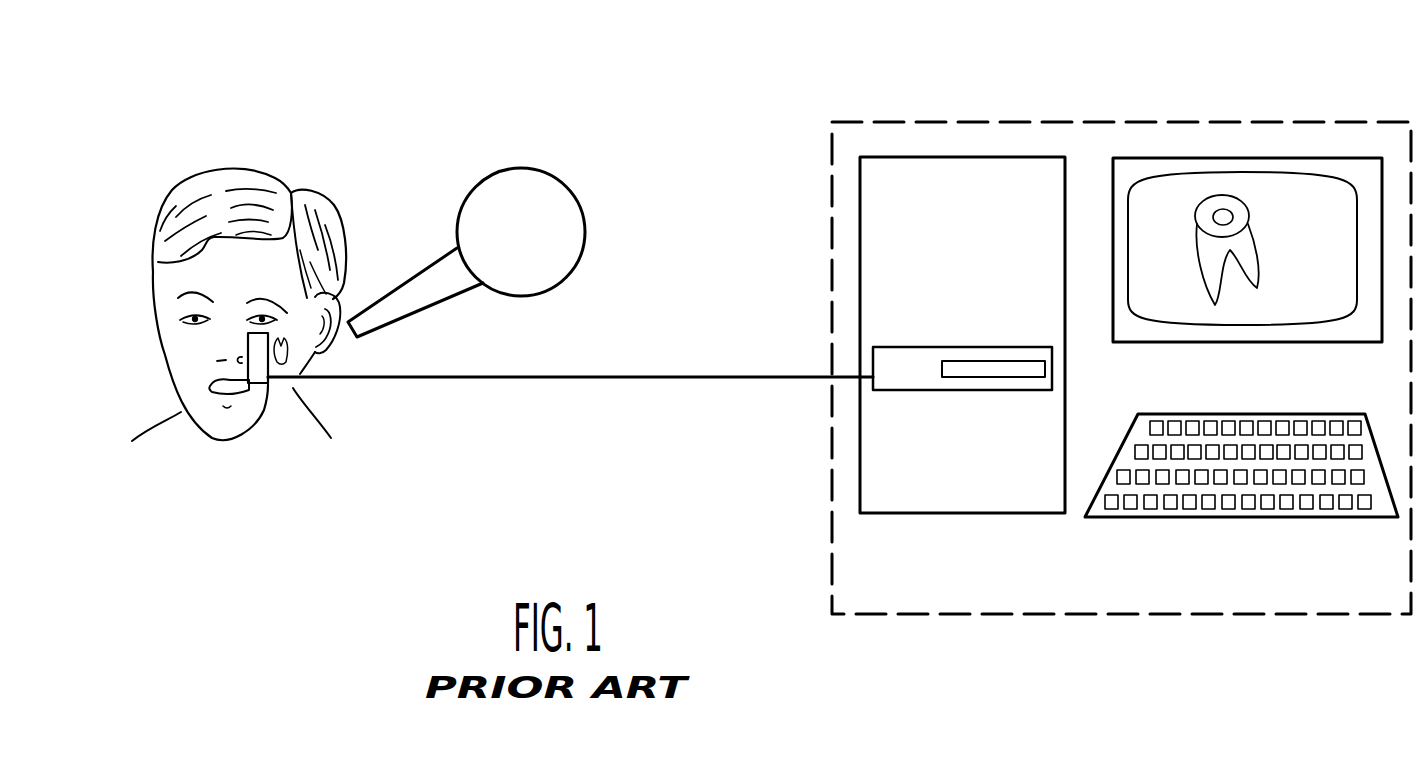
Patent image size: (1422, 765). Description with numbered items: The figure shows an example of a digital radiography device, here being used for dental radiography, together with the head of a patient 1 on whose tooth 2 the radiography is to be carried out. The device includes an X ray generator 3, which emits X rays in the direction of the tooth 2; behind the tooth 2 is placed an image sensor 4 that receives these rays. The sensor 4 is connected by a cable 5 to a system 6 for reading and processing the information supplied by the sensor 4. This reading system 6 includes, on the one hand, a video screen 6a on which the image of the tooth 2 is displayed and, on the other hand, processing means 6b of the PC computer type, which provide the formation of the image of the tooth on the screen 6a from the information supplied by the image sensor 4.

The patient 1 is at (167, 368).
The tooth 2 is at (308, 366).
The X ray generator 3 is at (557, 197).
The image sensor 4 is at (268, 388).
The cable 5 is at (687, 377).
The reading and processing system 6 is at (868, 119).
The video screen 6a is at (1268, 162).
The processing means 6b is at (868, 465).